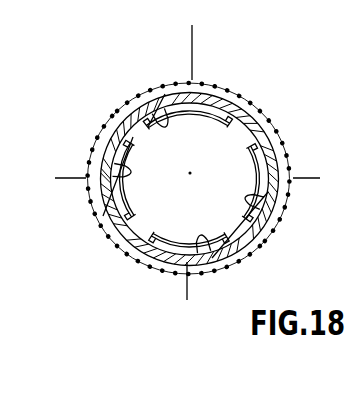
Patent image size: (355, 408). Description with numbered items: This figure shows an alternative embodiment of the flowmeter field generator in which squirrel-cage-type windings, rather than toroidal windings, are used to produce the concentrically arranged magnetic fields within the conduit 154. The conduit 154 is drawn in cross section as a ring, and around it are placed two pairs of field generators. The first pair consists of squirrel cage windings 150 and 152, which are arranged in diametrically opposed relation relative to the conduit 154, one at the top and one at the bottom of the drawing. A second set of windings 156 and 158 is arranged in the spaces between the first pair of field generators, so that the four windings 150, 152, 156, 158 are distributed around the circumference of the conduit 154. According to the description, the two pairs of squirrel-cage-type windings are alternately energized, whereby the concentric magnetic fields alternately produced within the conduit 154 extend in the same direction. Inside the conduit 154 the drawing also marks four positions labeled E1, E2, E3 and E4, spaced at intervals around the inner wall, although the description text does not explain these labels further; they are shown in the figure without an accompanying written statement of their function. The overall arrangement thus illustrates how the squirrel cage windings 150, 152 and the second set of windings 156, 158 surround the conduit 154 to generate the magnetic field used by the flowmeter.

The squirrel cage winding 150 is at (209, 80).
The squirrel cage winding 152 is at (157, 268).
The conduit 154 is at (250, 122).
The winding 156 is at (112, 242).
The winding 158 is at (281, 133).
The electrode 1 E1 is at (156, 112).
The electrode 2 E2 is at (203, 253).
The electrode 3 E3 is at (118, 164).
The electrode 4 E4 is at (266, 203).